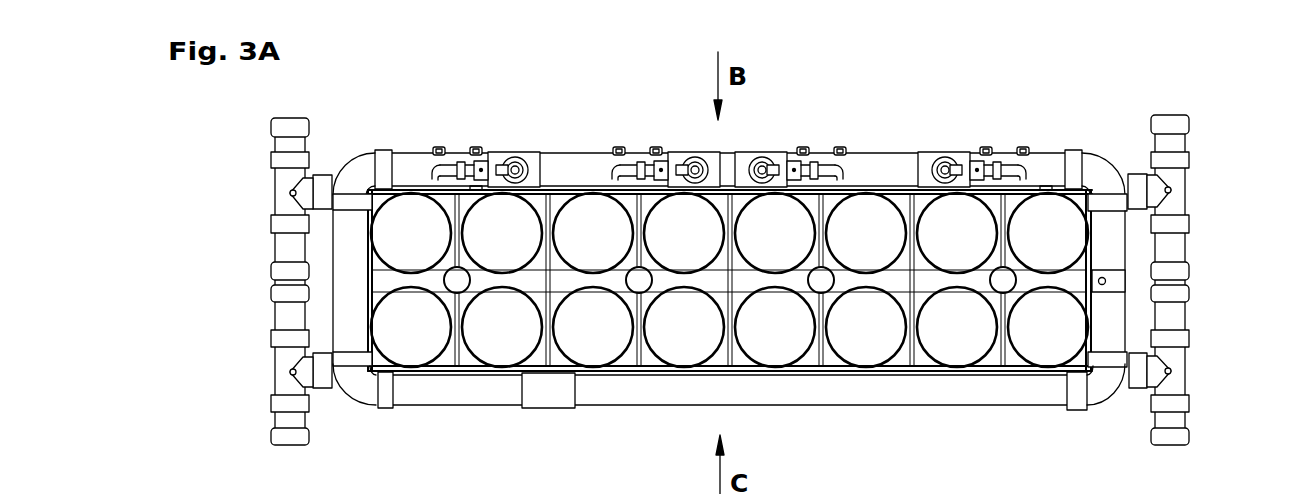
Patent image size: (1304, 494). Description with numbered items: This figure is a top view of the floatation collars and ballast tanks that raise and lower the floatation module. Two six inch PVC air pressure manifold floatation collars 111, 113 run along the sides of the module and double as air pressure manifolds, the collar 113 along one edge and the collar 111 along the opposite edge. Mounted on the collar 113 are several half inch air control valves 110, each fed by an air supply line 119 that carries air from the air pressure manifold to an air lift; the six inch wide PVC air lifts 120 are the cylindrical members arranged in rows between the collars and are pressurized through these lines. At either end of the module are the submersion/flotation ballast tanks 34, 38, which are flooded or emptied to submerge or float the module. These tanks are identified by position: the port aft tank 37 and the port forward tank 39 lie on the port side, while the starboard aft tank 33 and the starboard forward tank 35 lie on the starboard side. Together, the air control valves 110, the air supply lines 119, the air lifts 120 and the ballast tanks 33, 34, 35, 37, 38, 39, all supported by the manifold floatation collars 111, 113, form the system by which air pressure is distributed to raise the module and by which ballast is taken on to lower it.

The starboard aft tank 33 is at (1210, 366).
The submersion/flotation ballast tank 34 is at (707, 423).
The starboard forward tank 35 is at (254, 364).
The port aft tank 37 is at (1210, 190).
The submersion/flotation ballast tank 38 is at (1152, 85).
The port forward tank 39 is at (288, 247).
The air control valve 110 is at (732, 109).
The PVC air pressure manifold floatation collar 111 is at (729, 420).
The PVC air pressure manifold floatation collar 113 is at (731, 155).
The air supply line 119 is at (474, 147).
The PVC air lift 120 is at (639, 292).